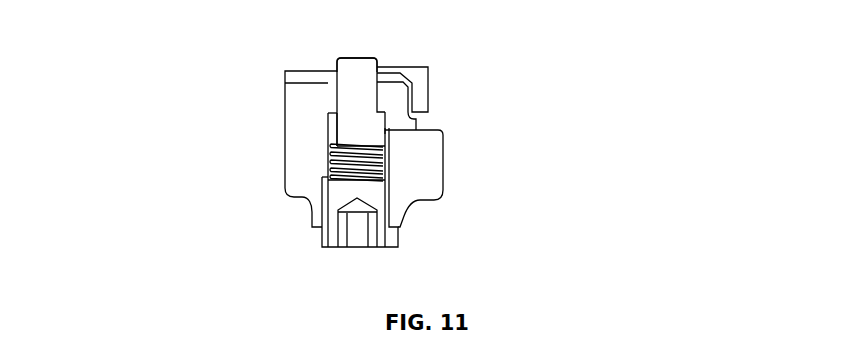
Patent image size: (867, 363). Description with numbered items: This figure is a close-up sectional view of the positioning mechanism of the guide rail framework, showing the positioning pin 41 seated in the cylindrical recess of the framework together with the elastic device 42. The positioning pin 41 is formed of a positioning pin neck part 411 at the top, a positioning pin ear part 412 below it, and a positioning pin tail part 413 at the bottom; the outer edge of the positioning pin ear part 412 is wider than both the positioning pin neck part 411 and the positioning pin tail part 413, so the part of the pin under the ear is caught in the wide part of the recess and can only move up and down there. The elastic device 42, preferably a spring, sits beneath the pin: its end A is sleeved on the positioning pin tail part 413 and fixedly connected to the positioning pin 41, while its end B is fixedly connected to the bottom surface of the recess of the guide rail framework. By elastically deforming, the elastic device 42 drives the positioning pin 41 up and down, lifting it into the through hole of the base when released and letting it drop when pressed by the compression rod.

The positioning pin 41 is at (378, 100).
The positioning pin neck part 411 is at (330, 81).
The positioning pin ear part 412 is at (306, 121).
The positioning pin tail part 413 is at (330, 141).
The elastic device 42 is at (390, 156).
The end A of the elastic device A is at (405, 130).
The end B of the elastic device B is at (390, 177).